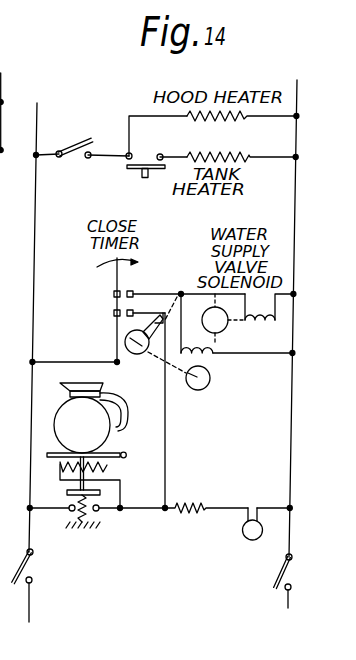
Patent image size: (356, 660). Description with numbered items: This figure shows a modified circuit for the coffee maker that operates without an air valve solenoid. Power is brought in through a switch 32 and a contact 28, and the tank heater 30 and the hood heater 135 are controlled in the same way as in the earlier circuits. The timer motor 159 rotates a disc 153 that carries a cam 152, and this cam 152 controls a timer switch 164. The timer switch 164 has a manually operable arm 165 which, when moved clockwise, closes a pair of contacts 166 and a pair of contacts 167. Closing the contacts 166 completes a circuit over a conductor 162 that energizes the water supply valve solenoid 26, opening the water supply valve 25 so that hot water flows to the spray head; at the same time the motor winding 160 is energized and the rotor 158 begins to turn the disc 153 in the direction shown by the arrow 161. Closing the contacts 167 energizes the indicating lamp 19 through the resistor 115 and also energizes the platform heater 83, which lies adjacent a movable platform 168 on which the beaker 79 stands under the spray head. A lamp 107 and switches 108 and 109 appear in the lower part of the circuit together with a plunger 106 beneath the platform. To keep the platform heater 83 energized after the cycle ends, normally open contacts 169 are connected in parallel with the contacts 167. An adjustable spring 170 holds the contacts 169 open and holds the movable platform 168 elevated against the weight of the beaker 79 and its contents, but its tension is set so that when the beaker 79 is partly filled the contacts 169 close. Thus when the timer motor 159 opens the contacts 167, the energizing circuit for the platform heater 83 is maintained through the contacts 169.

The main switch 32 is at (95, 145).
The thermostat contact 28 is at (145, 158).
The tank heater 30 is at (207, 154).
The hood heater 135 is at (236, 125).
The manually operable arm 165 is at (113, 268).
The timer switch 164 is at (98, 289).
The contacts 166 is at (133, 291).
The contacts 167 is at (114, 300).
The conductor 162 is at (181, 293).
The cam 152 is at (157, 321).
The arrow 161 is at (124, 340).
The disc 153 is at (128, 355).
The motor winding 160 is at (236, 323).
The water supply valve 25 is at (226, 326).
The water supply valve solenoid 26 is at (263, 326).
The rotor 158 is at (193, 391).
The timer motor 159 is at (218, 408).
The beaker 79 is at (60, 412).
The movable platform 168 is at (52, 450).
The platform heater 83 is at (108, 468).
The plunger 106 is at (31, 472).
The normally open contacts 169 is at (70, 512).
The adjustable spring 170 is at (106, 521).
The switch 108 is at (36, 571).
The resistor 115 is at (206, 524).
The indicating lamp 19 is at (243, 536).
The lamp 107 is at (287, 538).
The switch 109 is at (272, 581).